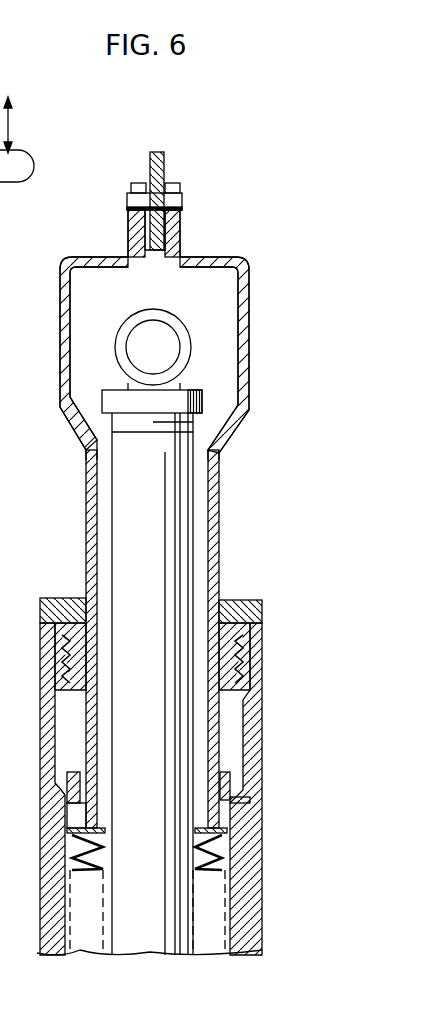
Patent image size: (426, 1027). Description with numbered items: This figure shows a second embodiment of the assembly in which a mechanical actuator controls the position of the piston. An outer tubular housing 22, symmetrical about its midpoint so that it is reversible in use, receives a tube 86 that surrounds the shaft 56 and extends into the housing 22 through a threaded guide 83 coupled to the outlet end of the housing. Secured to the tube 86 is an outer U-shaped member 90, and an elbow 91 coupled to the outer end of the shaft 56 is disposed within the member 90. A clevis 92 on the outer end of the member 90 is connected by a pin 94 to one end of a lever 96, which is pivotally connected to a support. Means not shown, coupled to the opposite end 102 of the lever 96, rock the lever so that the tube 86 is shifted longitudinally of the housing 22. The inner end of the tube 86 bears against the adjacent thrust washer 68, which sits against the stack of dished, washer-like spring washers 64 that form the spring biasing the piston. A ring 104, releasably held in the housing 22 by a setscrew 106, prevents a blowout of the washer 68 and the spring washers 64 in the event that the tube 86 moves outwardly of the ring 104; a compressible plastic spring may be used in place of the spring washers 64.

The housing 22 is at (262, 893).
The shaft 56 is at (160, 483).
The spring washers 64 is at (220, 862).
The thrust washer 68 is at (225, 830).
The threaded guide 83 is at (55, 630).
The tube 86 is at (215, 572).
The U-shaped member 90 is at (248, 380).
The elbow 91 is at (173, 352).
The clevis 92 is at (178, 228).
The pin 94 is at (182, 200).
The lever 96 is at (166, 187).
The opposite end of lever 102 is at (12, 182).
The ring 104 is at (230, 775).
The setscrew 106 is at (240, 800).